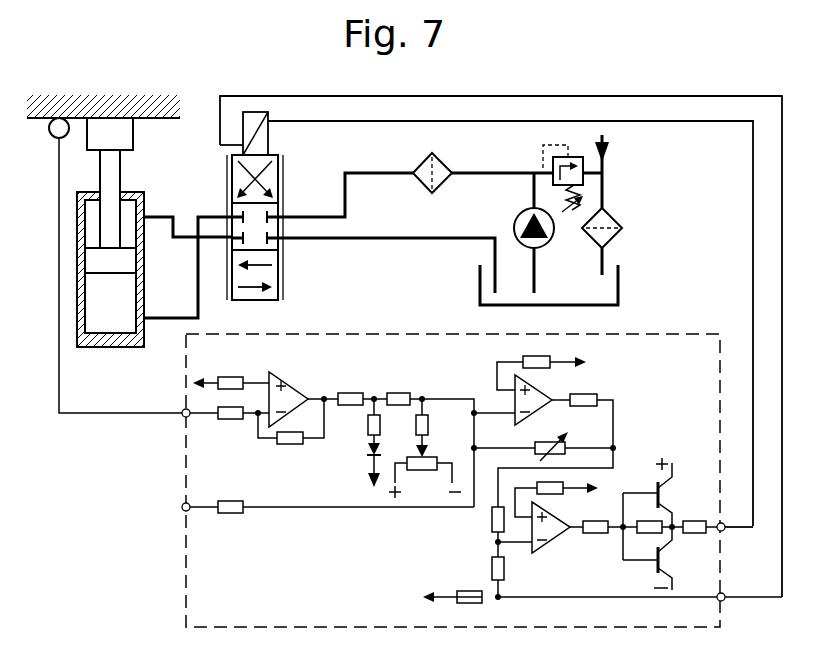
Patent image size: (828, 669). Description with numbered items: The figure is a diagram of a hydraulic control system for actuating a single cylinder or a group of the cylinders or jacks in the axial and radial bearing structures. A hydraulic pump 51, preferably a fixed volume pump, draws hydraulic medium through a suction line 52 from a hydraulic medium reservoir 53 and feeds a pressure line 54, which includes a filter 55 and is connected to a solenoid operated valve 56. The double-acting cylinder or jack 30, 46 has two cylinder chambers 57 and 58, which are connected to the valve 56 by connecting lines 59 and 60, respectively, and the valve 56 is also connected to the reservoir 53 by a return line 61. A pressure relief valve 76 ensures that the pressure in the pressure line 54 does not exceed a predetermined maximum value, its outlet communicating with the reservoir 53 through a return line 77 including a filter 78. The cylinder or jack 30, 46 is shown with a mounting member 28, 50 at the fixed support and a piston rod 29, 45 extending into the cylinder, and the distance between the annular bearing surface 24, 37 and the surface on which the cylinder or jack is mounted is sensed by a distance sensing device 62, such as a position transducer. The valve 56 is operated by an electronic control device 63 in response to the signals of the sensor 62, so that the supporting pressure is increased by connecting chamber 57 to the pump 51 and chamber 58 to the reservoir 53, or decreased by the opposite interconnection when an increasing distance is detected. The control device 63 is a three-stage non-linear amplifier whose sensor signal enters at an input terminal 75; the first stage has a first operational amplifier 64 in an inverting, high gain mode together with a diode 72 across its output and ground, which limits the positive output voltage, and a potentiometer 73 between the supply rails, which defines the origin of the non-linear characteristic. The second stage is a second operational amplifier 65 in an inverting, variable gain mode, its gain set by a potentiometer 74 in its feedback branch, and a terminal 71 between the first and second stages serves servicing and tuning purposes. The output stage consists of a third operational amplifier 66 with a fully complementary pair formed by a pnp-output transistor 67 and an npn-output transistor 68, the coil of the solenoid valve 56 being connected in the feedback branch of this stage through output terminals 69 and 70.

The annular bearing surface 24 is at (123, 93).
The annular bearing surface 37 is at (152, 118).
The distance sensing device 62 is at (58, 118).
The mounting block 28 is at (148, 138).
The mounting block 50 is at (133, 139).
The piston rod 29 is at (154, 199).
The piston rod 45 is at (120, 170).
The cylinder chamber 58 is at (90, 220).
The cylinder or jack 30 is at (80, 260).
The cylinder or jack 46 is at (90, 262).
The cylinder chamber 57 is at (90, 318).
The connecting line 60 is at (168, 236).
The connecting line 59 is at (198, 300).
The solenoid operated valve 56 is at (278, 181).
The return line 61 is at (410, 241).
The pressure line 54 is at (475, 173).
The filter 55 is at (420, 160).
The hydraulic pump 51 is at (515, 222).
The suction line 52 is at (537, 279).
The pressure relief valve 76 is at (545, 150).
The return line 77 is at (604, 193).
The filter 78 is at (622, 231).
The hydraulic medium reservoir 53 is at (622, 281).
The electronic control device 63 is at (538, 629).
The input terminal 75 is at (183, 416).
The first operational amplifier 64 is at (290, 379).
The diode 72 is at (367, 448).
The potentiometer 73 is at (417, 470).
The terminal 71 is at (183, 507).
The second operational amplifier 65 is at (548, 388).
The potentiometer 74 is at (570, 435).
The third operational amplifier 66 is at (543, 549).
The pnp-output transistor 67 is at (656, 487).
The npn-output transistor 68 is at (656, 567).
The output terminal 69 is at (724, 531).
The output terminal 70 is at (724, 601).